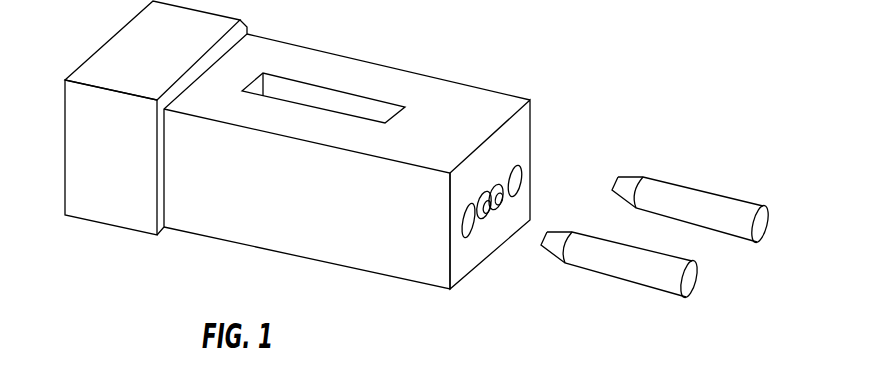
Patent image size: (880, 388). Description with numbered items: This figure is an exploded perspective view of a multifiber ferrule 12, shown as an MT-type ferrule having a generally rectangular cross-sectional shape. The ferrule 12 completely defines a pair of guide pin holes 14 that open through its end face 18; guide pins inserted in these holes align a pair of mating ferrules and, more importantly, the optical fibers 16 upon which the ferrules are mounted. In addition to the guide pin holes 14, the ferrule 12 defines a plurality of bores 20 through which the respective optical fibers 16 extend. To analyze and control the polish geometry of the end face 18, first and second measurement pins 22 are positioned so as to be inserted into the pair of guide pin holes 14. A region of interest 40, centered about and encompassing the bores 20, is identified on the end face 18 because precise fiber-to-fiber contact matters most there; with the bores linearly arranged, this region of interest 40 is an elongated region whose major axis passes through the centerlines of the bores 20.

The multifiber ferrule 12 is at (473, 86).
The guide pin holes 14 is at (521, 180).
The optical fibers 16 is at (503, 199).
The end face 18 is at (533, 130).
The bores 20 is at (488, 194).
The measurement pin 22 is at (676, 242).
The region of interest 40 is at (482, 214).